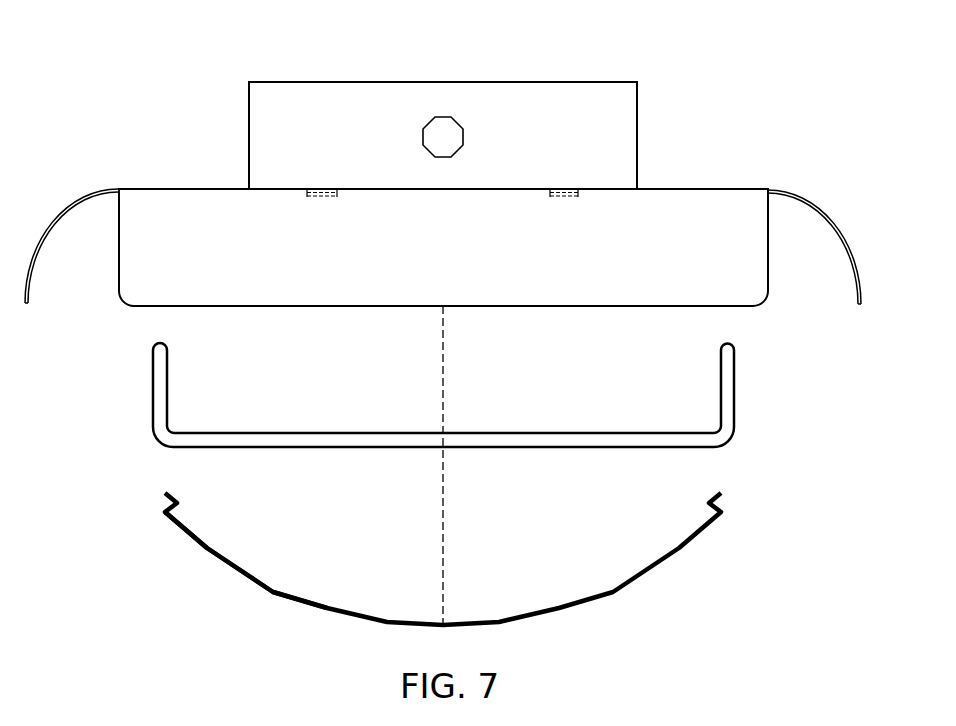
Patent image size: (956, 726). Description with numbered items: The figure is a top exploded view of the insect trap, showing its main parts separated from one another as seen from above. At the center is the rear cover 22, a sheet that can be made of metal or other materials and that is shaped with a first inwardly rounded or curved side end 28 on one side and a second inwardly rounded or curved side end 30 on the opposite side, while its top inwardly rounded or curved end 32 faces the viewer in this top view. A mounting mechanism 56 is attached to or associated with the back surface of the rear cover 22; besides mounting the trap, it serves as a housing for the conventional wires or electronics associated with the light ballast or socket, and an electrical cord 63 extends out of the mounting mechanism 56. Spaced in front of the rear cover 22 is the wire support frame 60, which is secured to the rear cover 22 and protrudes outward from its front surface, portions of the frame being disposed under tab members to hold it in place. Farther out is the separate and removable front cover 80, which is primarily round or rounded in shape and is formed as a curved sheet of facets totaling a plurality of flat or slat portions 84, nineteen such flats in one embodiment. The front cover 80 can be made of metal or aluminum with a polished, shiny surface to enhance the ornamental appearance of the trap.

The rear cover 22 is at (141, 186).
The first inwardly rounded or curved side end 28 is at (47, 228).
The second inwardly rounded or curved side end 30 is at (822, 200).
The top inwardly rounded or curved end 32 is at (252, 292).
The mounting mechanism 56 is at (599, 89).
The wire support frame 60 is at (153, 368).
The electrical cord 63 is at (443, 62).
The front cover 80 is at (607, 590).
The flat or slat portions 84 is at (241, 569).